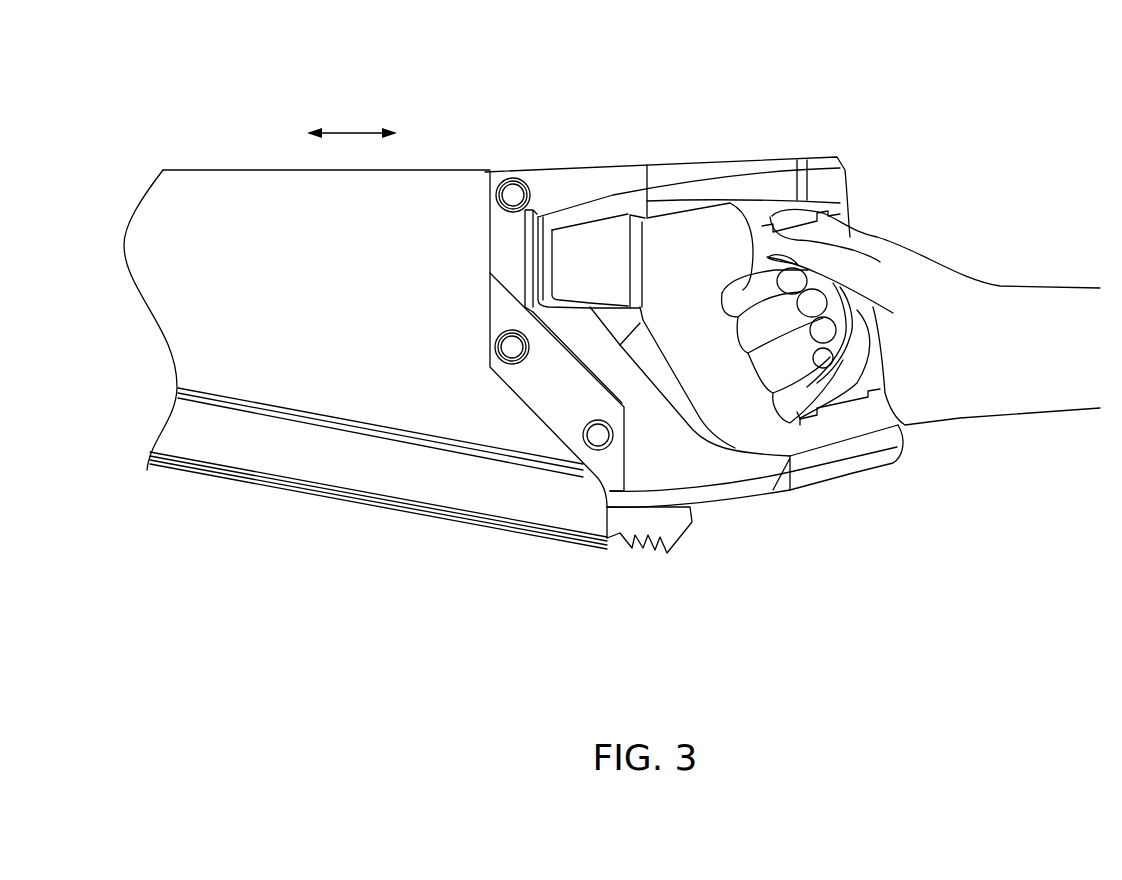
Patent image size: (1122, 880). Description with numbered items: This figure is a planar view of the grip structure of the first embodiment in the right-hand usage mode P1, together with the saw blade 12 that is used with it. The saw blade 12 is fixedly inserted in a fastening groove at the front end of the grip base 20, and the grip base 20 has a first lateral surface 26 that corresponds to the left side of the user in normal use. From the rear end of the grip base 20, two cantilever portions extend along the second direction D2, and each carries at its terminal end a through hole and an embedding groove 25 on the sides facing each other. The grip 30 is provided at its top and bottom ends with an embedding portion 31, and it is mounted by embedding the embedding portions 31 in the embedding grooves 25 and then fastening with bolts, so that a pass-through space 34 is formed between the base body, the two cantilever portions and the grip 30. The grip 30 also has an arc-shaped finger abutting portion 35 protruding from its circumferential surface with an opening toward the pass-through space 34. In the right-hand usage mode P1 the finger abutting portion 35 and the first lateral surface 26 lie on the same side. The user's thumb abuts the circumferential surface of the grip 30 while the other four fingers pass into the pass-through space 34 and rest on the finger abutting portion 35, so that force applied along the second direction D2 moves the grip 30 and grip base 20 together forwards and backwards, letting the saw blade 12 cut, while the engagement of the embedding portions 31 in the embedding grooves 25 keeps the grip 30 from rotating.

The saw blade 12 is at (219, 193).
The grip base 20 is at (512, 415).
The embedding groove 25 is at (839, 323).
The first lateral surface 26 is at (655, 465).
The grip 30 is at (887, 357).
The embedding portion 31 is at (808, 210).
The pass-through space 34 is at (685, 227).
The finger abutting portion 35 is at (855, 305).
The second direction D2 is at (352, 118).
The right-hand usage mode P1 is at (953, 127).